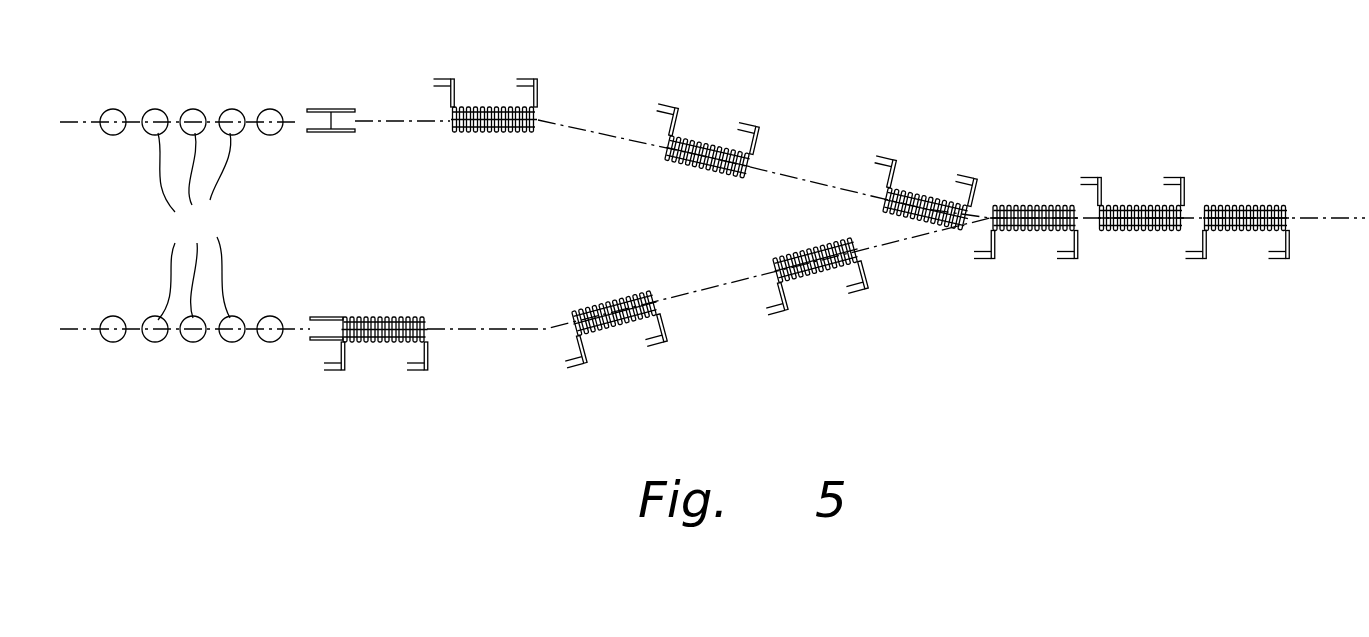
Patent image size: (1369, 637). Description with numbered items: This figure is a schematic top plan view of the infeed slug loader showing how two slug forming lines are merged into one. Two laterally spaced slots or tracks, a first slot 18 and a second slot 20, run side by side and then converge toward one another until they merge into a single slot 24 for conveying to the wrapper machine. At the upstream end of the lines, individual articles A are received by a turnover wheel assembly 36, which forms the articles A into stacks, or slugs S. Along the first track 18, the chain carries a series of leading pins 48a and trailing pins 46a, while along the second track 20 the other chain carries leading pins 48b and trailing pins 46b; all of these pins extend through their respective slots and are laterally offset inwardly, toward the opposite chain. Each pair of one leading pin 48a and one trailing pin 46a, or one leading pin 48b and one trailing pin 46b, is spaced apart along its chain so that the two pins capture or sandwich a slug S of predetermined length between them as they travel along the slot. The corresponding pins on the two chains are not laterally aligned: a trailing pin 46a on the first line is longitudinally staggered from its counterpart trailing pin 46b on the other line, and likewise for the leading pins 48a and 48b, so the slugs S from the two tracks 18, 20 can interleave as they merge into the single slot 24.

The first slot 18 is at (408, 113).
The second slot 20 is at (540, 327).
The single slot 24 is at (1315, 213).
The turnover wheel assembly 36 is at (299, 156).
The trailing pin 46a is at (447, 97).
The leading pin 48a is at (537, 92).
The trailing pin 46b is at (342, 350).
The leading pin 48b is at (428, 345).
The articles A is at (194, 226).
The slug S is at (667, 160).